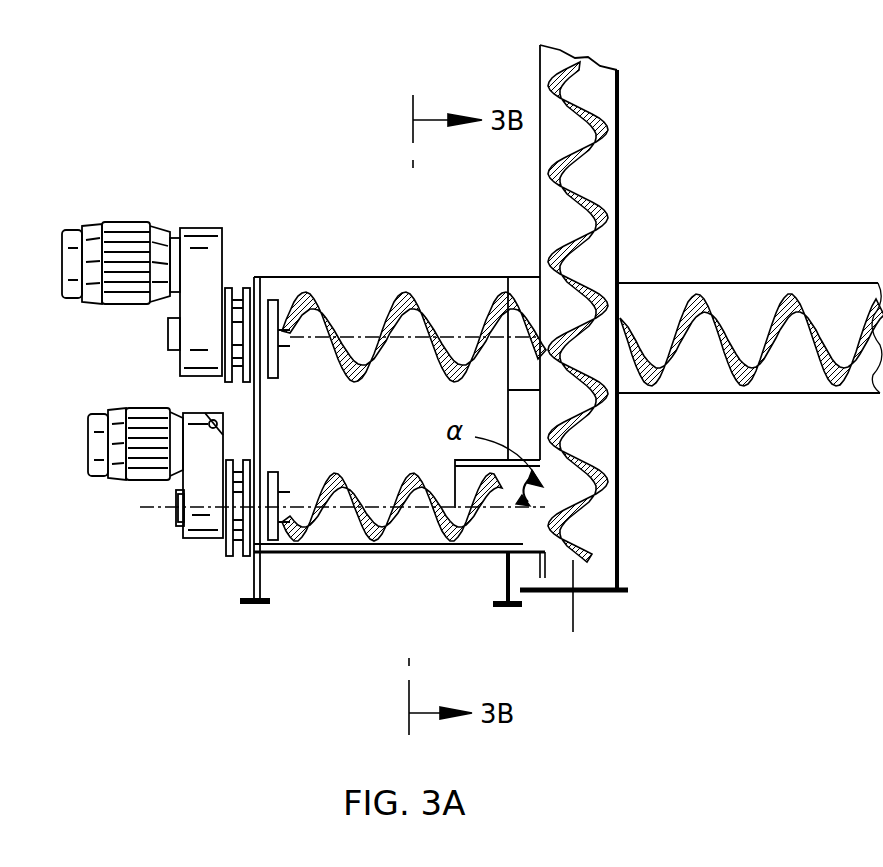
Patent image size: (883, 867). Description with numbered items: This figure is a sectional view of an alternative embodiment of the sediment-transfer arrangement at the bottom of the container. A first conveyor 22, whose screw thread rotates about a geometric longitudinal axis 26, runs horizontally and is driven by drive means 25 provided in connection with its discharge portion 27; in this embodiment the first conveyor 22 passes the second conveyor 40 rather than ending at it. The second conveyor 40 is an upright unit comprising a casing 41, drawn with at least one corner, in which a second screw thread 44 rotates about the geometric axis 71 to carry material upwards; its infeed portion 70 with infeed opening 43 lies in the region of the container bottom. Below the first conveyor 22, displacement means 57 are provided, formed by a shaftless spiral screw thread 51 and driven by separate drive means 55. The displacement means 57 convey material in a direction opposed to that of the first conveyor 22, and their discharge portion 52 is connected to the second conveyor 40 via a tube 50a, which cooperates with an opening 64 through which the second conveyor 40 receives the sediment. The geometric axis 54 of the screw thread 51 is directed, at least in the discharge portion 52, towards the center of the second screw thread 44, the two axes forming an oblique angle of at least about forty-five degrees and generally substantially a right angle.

The first conveyor 22 is at (735, 283).
The drive means 25 is at (115, 230).
The geometric longitudinal axis 26 is at (345, 328).
The discharge portion 27 is at (468, 277).
The second conveyor 40 is at (620, 123).
The casing 41 is at (600, 175).
The infeed opening 43 is at (555, 560).
The second screw thread 44 is at (618, 205).
The tube 50a is at (472, 462).
The screw thread 51 is at (362, 532).
The discharge portion 52 is at (500, 580).
The geometric axis 54 is at (160, 508).
The drive means 55 is at (138, 410).
The displacement means 57 is at (437, 553).
The opening 64 is at (545, 562).
The infeed portion 70 is at (605, 498).
The geometric axis 71 is at (573, 618).